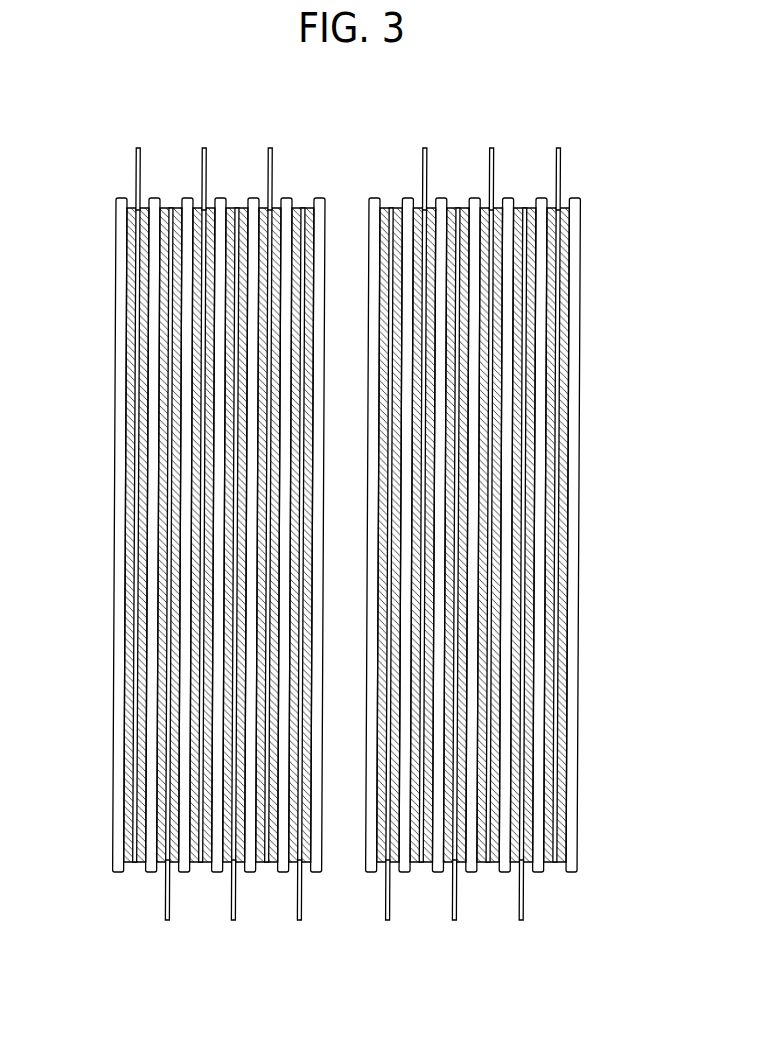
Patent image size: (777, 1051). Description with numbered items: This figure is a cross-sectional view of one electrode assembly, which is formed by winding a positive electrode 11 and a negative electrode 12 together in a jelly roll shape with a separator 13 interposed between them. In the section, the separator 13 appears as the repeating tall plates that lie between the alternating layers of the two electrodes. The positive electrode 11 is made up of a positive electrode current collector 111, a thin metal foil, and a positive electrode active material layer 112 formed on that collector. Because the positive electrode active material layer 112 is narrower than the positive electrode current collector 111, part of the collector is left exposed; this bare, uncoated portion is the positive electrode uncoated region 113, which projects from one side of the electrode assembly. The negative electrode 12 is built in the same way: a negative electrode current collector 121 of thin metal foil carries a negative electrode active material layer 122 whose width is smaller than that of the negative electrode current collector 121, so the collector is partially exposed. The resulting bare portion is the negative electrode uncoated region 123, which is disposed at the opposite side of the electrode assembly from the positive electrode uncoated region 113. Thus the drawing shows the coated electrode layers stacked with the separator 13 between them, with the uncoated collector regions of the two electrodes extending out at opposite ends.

The positive electrode 11 is at (161, 534).
The positive electrode current collector 111 is at (136, 287).
The positive electrode active material layer 112 is at (129, 357).
The positive electrode uncoated region 113 is at (162, 179).
The negative electrode 12 is at (528, 534).
The negative electrode current collector 121 is at (525, 812).
The negative electrode active material layer 122 is at (532, 792).
The negative electrode uncoated region 123 is at (512, 890).
The separator 13 is at (185, 727).